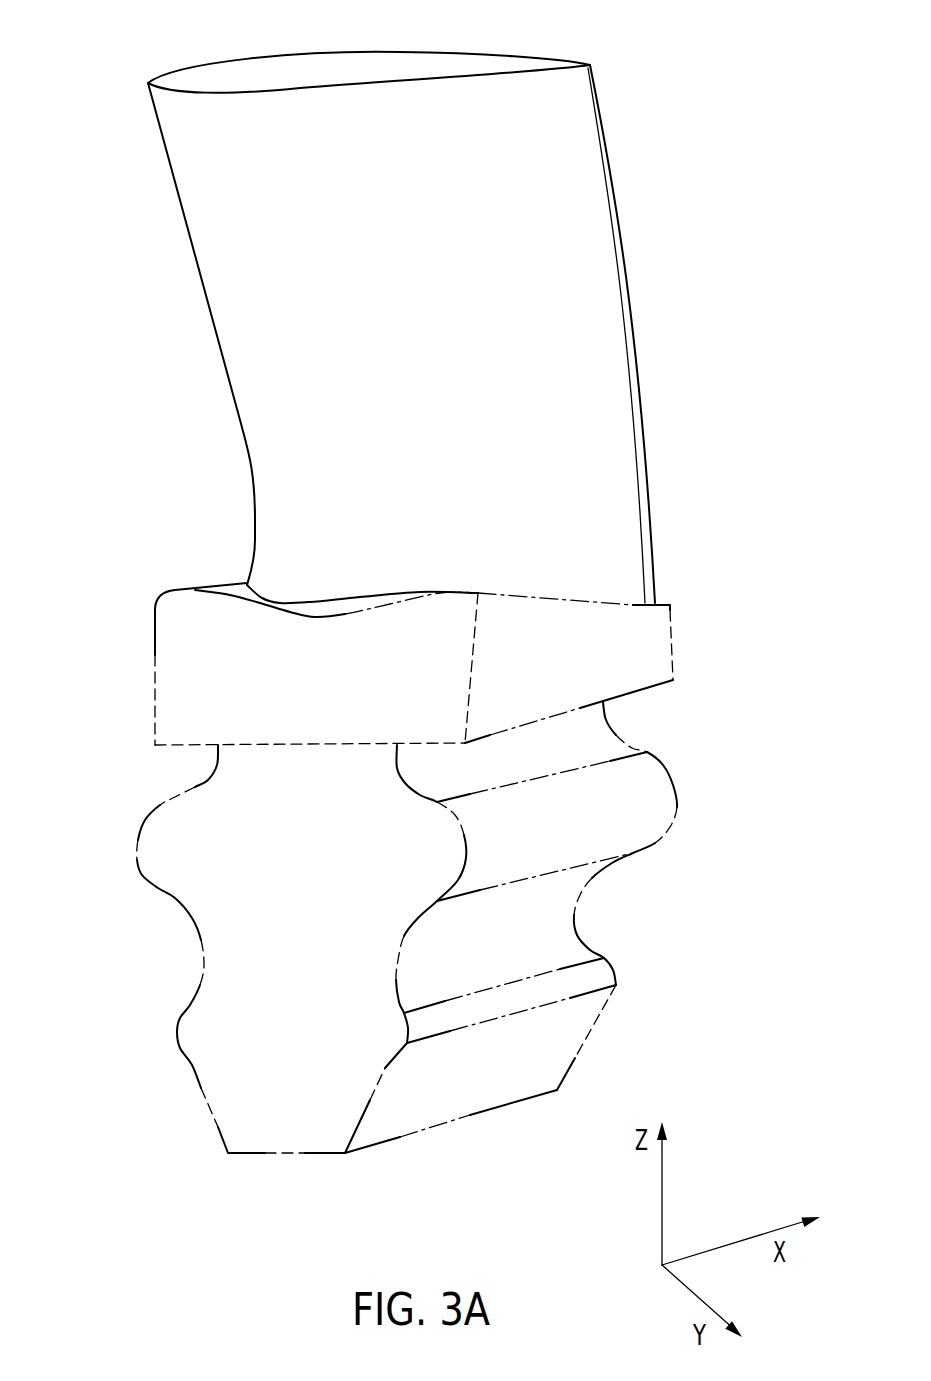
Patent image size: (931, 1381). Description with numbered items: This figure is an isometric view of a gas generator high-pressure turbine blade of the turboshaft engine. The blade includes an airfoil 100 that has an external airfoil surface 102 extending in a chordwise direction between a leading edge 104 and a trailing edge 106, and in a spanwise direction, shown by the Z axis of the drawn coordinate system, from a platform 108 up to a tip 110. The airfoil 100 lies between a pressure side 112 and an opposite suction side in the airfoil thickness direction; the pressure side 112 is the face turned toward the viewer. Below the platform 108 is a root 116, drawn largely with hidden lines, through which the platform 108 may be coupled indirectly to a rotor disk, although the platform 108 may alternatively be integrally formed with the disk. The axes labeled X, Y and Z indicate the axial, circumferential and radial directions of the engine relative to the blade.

The airfoil 100 is at (693, 107).
The external airfoil surface 102 is at (252, 272).
The leading edge 104 is at (247, 460).
The trailing edge 106 is at (646, 390).
The platform 108 is at (203, 668).
The tip 110 is at (367, 52).
The pressure side 112 is at (270, 147).
The root 116 is at (552, 933).